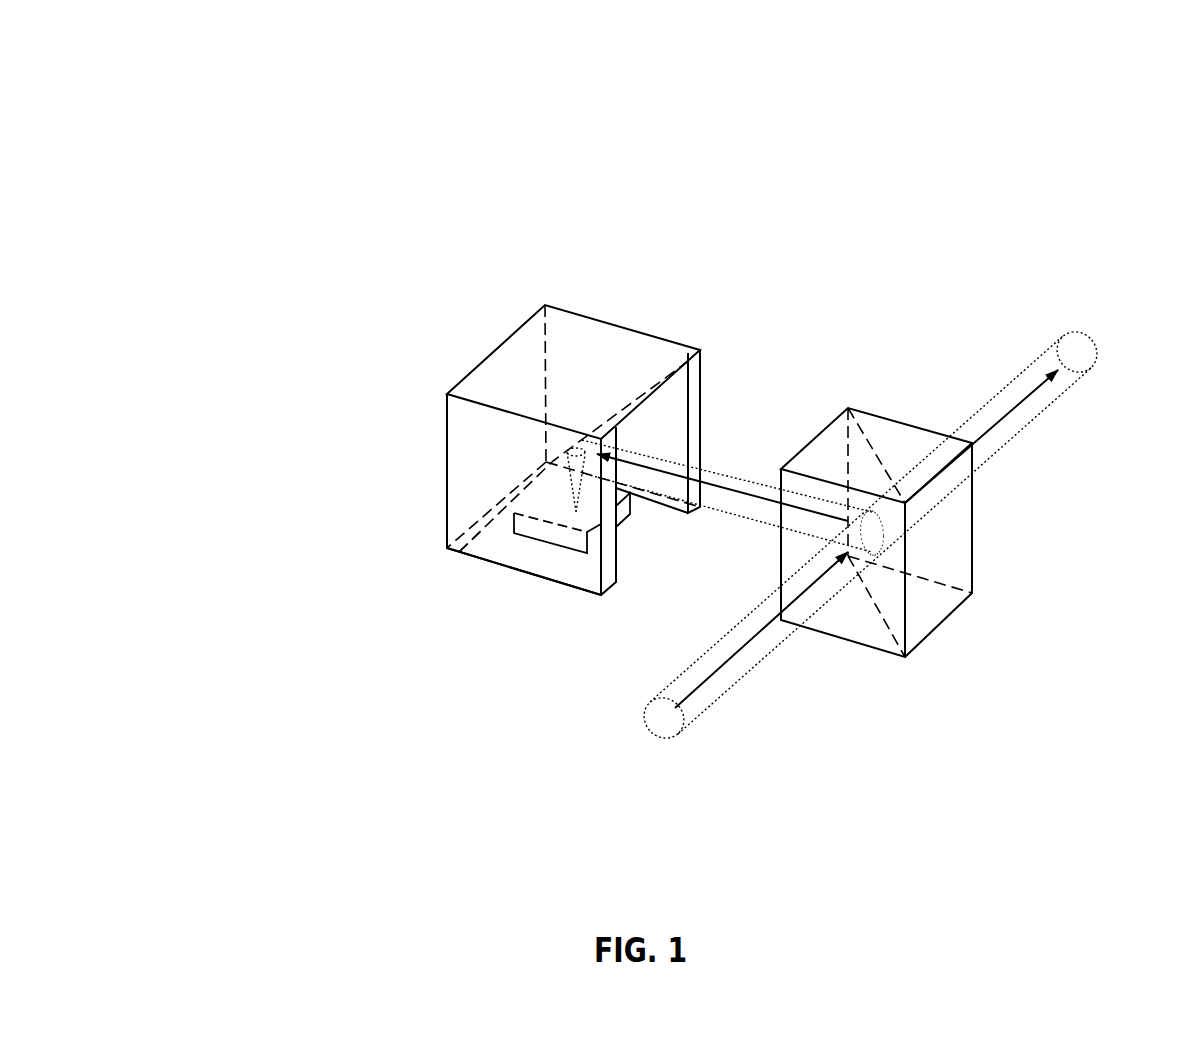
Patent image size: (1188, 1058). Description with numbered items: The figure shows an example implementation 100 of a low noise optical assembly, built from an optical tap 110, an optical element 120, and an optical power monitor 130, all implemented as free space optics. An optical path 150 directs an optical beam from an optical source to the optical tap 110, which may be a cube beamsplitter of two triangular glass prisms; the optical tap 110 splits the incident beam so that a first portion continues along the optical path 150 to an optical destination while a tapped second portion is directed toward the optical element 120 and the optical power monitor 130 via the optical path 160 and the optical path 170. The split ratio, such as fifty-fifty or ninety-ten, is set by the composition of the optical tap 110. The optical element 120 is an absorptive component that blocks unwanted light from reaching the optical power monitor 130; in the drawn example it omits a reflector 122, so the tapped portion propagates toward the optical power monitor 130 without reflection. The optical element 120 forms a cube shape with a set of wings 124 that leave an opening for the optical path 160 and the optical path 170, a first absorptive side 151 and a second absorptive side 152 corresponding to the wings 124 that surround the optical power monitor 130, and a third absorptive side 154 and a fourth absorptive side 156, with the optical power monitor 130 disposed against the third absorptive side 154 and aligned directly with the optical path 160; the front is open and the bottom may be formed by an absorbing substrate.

The example implementation 100 is at (158, 70).
The optical tap 110 is at (988, 633).
The optical element 120 is at (576, 466).
The reflector 122 is at (528, 482).
The wings 124 is at (480, 565).
The optical power monitor 130 is at (550, 548).
The optical path 150 is at (1073, 410).
The first absorptive side 151 is at (472, 550).
The second absorptive side 152 is at (678, 413).
The third absorptive side 154 is at (468, 428).
The fourth absorptive side 156 is at (535, 342).
The optical path 160 is at (728, 522).
The optical path 170 is at (577, 516).